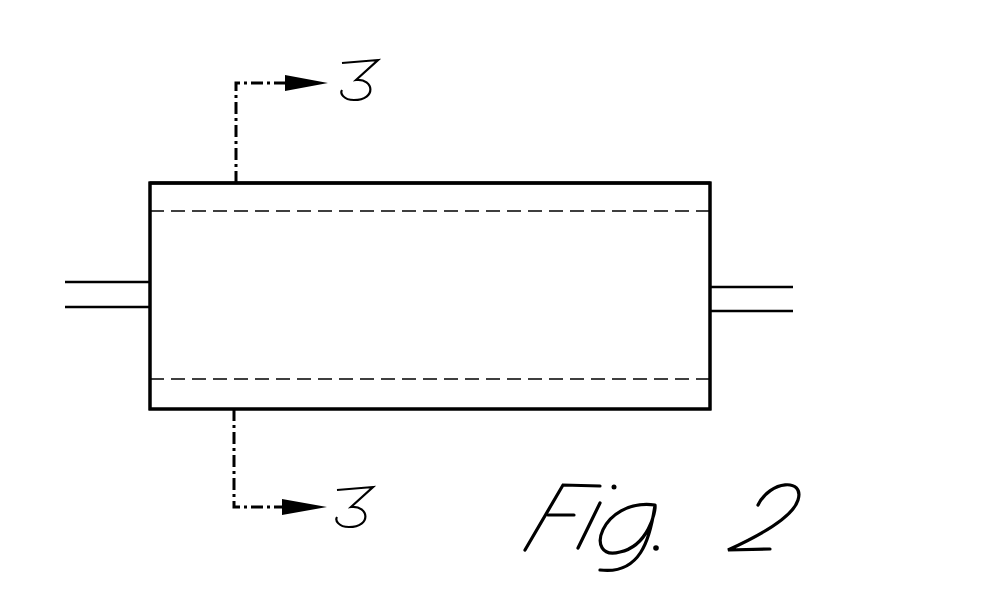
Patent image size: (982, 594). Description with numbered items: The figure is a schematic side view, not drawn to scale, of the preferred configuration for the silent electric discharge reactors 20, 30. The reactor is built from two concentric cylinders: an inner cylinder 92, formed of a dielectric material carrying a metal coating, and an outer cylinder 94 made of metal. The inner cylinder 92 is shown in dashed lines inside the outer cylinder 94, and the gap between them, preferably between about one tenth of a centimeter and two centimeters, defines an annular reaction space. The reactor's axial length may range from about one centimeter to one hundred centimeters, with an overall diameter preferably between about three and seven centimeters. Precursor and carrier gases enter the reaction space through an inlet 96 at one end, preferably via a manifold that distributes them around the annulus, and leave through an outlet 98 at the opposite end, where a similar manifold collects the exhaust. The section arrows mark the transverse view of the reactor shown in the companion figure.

The silent electric discharge reactor 20 is at (666, 74).
The silent electric discharge reactor 30 is at (430, 296).
The inner cylinder 92 is at (537, 211).
The outer cylinder 94 is at (430, 183).
The inlet 96 is at (108, 282).
The outlet 98 is at (753, 286).